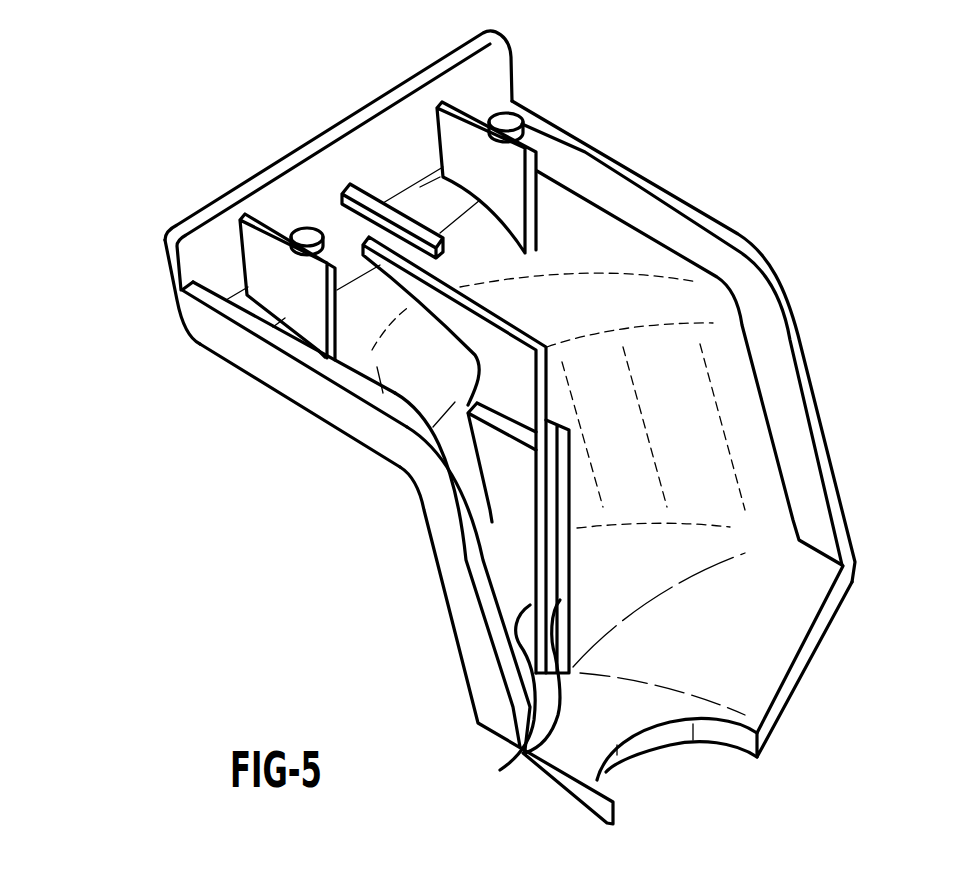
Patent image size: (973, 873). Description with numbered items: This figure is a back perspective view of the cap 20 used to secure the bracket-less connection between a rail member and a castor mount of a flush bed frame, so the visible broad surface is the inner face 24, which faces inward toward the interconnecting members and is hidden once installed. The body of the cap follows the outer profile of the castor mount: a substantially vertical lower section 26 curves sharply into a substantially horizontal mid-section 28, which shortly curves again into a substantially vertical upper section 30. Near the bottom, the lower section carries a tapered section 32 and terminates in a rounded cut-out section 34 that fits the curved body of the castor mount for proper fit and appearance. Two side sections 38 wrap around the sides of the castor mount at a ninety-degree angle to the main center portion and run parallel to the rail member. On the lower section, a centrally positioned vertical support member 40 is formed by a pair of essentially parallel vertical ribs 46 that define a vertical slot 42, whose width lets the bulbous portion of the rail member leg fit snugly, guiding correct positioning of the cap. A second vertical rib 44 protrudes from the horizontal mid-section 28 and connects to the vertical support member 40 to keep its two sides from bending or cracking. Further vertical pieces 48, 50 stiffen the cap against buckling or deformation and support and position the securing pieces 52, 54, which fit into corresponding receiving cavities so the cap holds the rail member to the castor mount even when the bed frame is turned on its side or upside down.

The cap 20 is at (853, 178).
The inner face 24 is at (660, 367).
The vertical lower section 26 is at (470, 622).
The horizontal mid-section 28 is at (292, 378).
The vertical upper section 30 is at (170, 263).
The tapered section 32 is at (807, 587).
The rounded cut-out section 34 is at (640, 752).
The side sections 38 is at (577, 143).
The vertical support member 40 is at (527, 484).
The vertical slot 42 is at (545, 517).
The second vertical rib 44 is at (462, 345).
The vertical ribs 46 is at (532, 737).
The vertical piece 48 is at (257, 252).
The vertical piece 50 is at (458, 160).
The securing piece 52 is at (310, 243).
The securing piece 54 is at (508, 122).